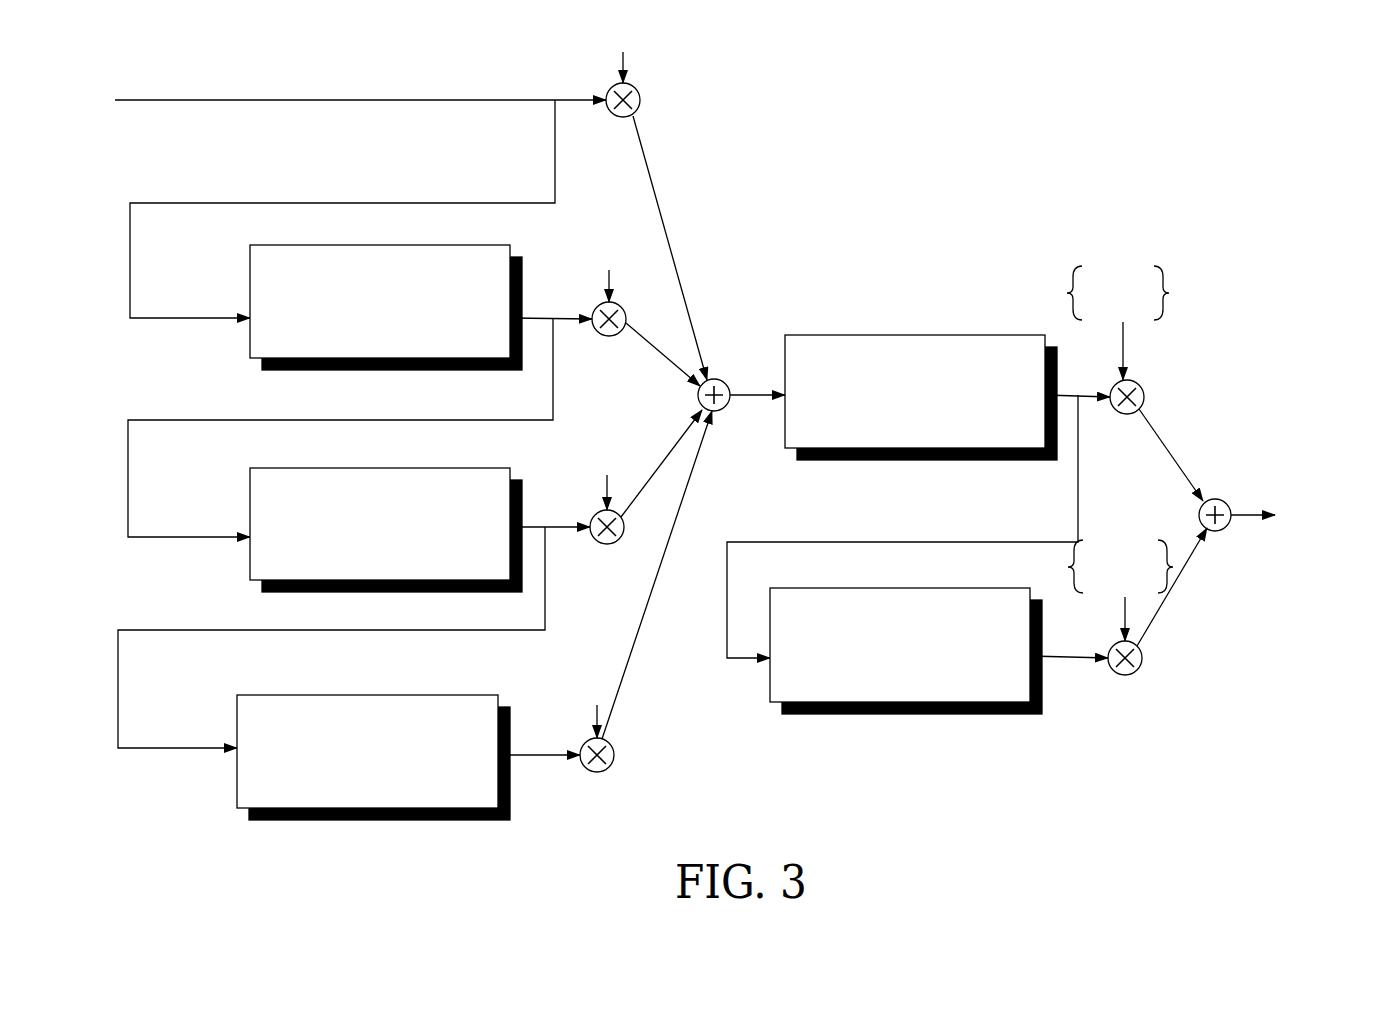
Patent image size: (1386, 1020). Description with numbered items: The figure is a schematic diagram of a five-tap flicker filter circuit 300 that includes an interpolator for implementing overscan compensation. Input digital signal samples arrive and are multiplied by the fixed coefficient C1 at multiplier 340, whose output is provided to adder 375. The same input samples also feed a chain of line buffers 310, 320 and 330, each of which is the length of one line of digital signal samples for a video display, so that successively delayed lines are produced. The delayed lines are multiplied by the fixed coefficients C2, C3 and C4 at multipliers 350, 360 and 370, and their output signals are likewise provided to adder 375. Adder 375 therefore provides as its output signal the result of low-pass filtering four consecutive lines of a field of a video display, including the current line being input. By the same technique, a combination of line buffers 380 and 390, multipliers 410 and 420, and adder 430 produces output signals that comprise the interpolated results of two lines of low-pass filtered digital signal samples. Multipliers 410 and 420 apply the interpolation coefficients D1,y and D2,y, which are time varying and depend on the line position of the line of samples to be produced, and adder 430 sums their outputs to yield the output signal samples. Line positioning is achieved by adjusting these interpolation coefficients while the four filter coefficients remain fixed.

The flicker filter circuit 300 is at (745, 833).
The line buffer 310 is at (362, 348).
The line buffer 320 is at (362, 567).
The line buffer 330 is at (349, 795).
The multiplier 340 is at (641, 101).
The multiplier 350 is at (609, 337).
The multiplier 360 is at (607, 545).
The multiplier 370 is at (615, 756).
The adder 375 is at (723, 376).
The line buffer 380 is at (897, 435).
The line buffer 390 is at (882, 687).
The multiplier 410 is at (1172, 393).
The multiplier 420 is at (1143, 659).
The adder 430 is at (1251, 490).